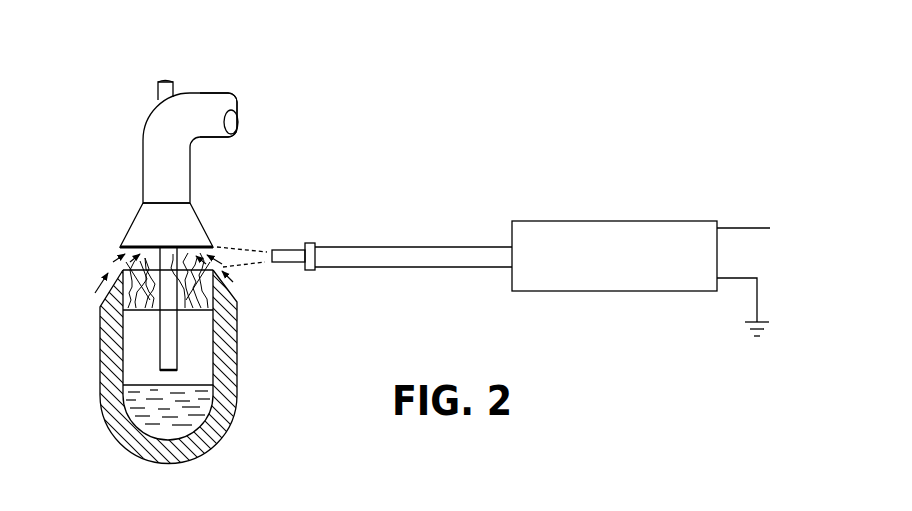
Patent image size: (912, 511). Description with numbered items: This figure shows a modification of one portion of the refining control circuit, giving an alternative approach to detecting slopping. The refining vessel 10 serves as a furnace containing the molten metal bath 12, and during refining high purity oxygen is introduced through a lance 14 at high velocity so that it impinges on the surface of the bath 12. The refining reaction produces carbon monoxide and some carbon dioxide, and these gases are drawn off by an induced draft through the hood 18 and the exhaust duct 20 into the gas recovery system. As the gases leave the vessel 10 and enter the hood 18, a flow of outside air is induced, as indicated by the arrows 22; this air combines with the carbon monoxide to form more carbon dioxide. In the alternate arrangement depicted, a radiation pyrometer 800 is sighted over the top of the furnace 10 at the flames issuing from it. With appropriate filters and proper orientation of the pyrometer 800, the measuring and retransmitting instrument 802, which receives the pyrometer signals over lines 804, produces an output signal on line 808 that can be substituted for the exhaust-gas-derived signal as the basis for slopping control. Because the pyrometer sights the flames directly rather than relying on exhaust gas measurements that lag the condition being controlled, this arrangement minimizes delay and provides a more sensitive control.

The refining vessel 10 is at (230, 380).
The molten metal bath 12 is at (133, 397).
The lance 14 is at (160, 336).
The hood 18 is at (143, 176).
The exhaust duct 20 is at (208, 92).
The arrows 22 is at (103, 268).
The radiation pyrometer 800 is at (290, 250).
The measuring and retransmitting instrument 802 is at (584, 221).
The lines 804 is at (418, 262).
The line 808 is at (742, 227).